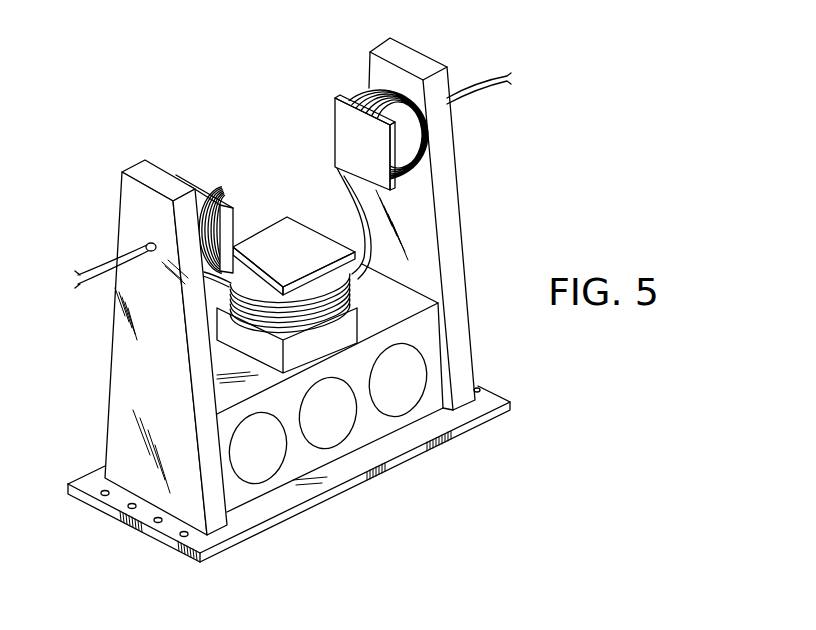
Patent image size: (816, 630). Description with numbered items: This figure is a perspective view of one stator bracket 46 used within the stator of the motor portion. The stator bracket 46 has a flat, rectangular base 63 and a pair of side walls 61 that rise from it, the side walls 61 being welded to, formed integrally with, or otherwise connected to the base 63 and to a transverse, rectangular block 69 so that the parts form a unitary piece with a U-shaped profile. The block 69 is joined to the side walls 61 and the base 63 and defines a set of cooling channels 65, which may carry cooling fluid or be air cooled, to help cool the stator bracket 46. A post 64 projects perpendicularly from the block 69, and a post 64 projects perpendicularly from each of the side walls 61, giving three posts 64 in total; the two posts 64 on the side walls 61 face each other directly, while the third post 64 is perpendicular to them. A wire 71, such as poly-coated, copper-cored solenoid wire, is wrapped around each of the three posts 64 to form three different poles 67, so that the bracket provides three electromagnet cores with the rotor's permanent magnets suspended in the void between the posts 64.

The stator bracket 46 is at (161, 54).
The side walls 61 is at (108, 374).
The base 63 is at (420, 433).
The post 64 is at (375, 155).
The cooling channels 65 is at (268, 457).
The poles 67 is at (319, 131).
The block 69 is at (398, 307).
The wire 71 is at (362, 97).